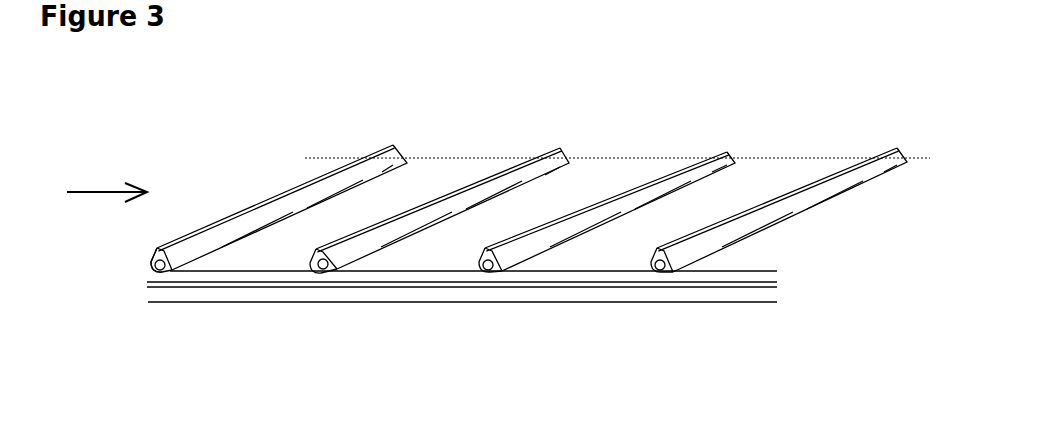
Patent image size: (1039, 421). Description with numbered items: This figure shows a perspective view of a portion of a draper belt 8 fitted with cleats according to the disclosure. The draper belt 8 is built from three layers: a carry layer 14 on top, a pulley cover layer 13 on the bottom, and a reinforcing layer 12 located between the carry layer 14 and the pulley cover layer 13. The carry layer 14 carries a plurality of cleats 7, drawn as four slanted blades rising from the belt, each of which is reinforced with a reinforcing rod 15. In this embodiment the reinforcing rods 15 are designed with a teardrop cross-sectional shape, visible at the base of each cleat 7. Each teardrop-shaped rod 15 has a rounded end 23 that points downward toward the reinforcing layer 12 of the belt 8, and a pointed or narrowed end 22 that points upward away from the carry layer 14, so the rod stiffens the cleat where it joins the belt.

The louver slat 7 is at (548, 163).
The carry layer 14 is at (702, 207).
The draper belt 8 is at (96, 191).
The pointed or narrowed end 22 is at (153, 257).
The rounded end 23 is at (158, 270).
The reinforcing rod 15 is at (488, 269).
The reinforcing layer 12 is at (565, 285).
The pulley cover layer 13 is at (248, 293).